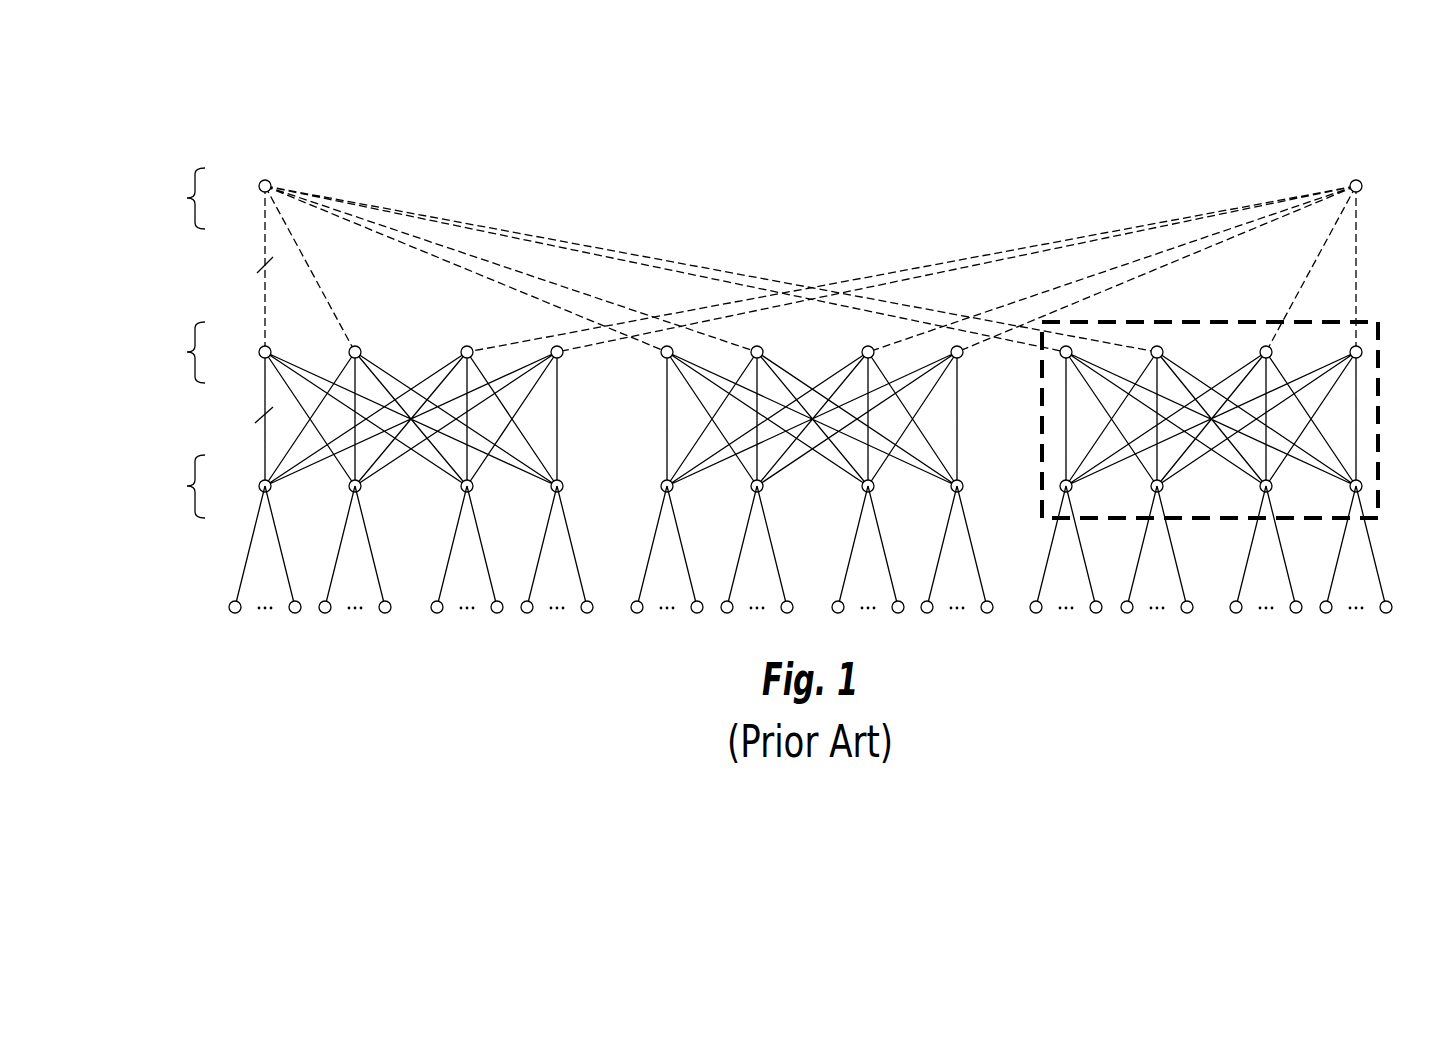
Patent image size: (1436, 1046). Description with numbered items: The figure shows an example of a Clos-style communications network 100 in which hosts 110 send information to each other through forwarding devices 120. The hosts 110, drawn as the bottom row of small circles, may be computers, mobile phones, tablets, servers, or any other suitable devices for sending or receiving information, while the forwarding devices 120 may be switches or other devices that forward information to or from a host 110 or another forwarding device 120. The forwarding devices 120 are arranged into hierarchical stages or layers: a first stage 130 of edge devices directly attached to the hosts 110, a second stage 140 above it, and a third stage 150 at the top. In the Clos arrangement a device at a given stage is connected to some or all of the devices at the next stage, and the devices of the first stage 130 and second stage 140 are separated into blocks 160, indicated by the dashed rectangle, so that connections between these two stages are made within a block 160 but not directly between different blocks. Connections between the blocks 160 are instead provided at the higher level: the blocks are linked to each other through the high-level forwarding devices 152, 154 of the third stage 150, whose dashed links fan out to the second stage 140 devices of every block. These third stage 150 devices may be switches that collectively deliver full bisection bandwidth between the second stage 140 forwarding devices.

The network 100 is at (774, 425).
The host 110 is at (216, 677).
The forwarding device 120 is at (560, 480).
The first stage 130 is at (187, 486).
The second stage 140 is at (187, 352).
The third stage 150 is at (187, 198).
The high-level forwarding device 152 is at (250, 169).
The high-level forwarding device 154 is at (1342, 170).
The block 160 is at (1393, 505).